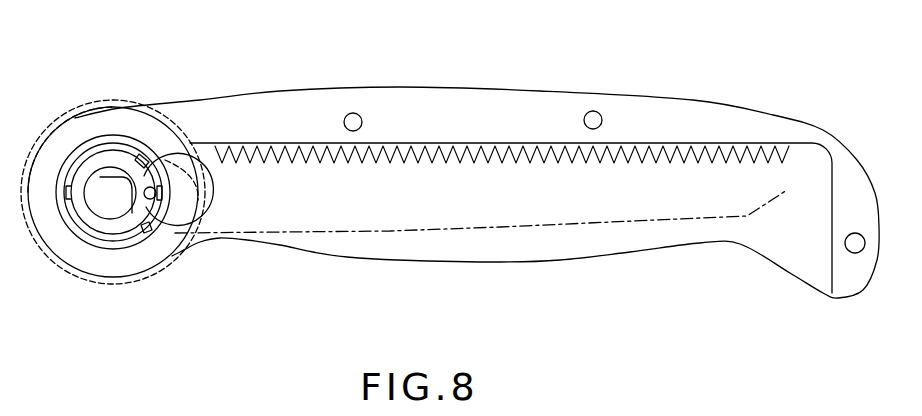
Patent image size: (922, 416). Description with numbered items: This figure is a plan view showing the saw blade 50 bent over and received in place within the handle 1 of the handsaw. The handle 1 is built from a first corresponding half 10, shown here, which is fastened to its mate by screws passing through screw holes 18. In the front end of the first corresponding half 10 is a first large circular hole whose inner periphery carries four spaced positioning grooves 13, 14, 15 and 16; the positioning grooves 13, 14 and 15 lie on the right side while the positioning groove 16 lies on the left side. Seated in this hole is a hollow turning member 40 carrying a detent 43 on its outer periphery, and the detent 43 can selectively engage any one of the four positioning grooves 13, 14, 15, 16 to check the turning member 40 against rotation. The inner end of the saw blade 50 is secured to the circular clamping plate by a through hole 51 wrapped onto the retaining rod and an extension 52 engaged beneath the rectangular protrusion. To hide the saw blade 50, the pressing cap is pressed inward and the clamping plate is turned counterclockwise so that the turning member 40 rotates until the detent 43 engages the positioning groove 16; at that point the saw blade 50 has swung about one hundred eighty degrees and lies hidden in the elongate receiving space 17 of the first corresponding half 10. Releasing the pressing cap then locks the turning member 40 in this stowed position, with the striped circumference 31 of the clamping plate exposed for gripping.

The handle 1 is at (770, 75).
The first corresponding half 10 is at (675, 105).
The positioning groove 13 is at (150, 165).
The positioning groove 14 is at (150, 205).
The positioning groove 15 is at (148, 200).
The positioning groove 16 is at (113, 208).
The detent 43 is at (67, 198).
The receiving space 17 is at (628, 240).
The screw hole 18 is at (590, 115).
The blade edge 31 is at (70, 118).
The turning member 40 is at (107, 200).
The saw blade 50 is at (385, 212).
The through hole 51 is at (165, 158).
The extension 52 is at (105, 175).